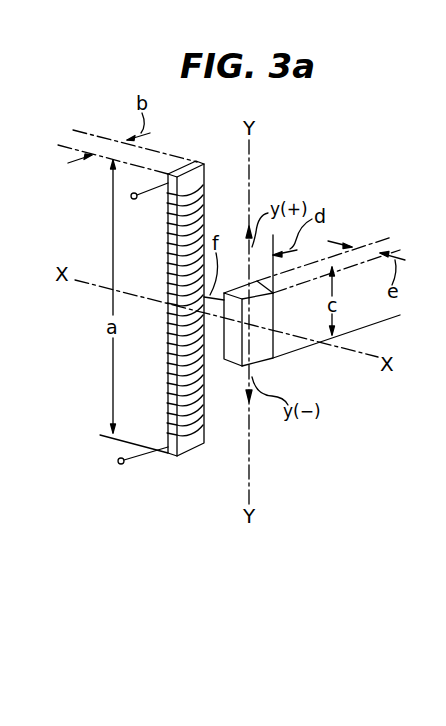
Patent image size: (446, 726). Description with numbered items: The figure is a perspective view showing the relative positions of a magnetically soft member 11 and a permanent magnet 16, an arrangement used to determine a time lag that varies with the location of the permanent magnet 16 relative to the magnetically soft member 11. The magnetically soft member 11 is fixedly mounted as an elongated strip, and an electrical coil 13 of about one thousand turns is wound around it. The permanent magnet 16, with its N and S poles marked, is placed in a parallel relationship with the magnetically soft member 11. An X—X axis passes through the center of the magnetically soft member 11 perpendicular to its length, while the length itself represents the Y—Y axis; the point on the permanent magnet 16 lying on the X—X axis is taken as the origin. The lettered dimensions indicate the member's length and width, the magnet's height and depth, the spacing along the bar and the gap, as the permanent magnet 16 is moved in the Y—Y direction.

The magnetically soft member 11 is at (190, 180).
The electrical coil 13 is at (147, 449).
The permanent magnet 16 is at (274, 352).